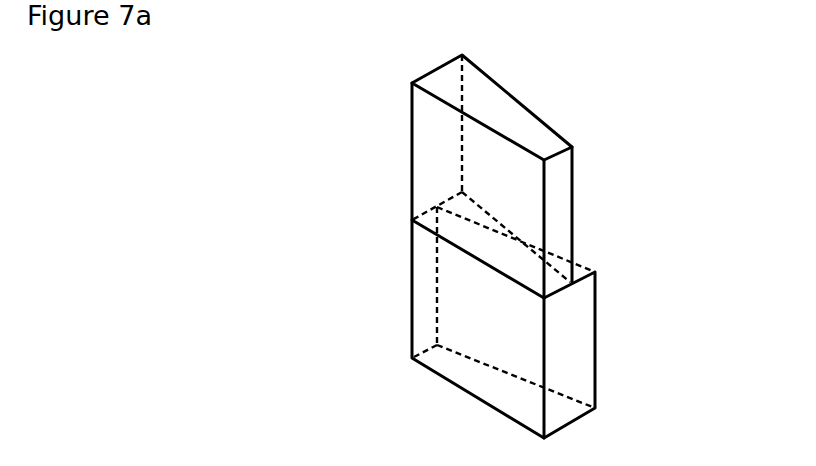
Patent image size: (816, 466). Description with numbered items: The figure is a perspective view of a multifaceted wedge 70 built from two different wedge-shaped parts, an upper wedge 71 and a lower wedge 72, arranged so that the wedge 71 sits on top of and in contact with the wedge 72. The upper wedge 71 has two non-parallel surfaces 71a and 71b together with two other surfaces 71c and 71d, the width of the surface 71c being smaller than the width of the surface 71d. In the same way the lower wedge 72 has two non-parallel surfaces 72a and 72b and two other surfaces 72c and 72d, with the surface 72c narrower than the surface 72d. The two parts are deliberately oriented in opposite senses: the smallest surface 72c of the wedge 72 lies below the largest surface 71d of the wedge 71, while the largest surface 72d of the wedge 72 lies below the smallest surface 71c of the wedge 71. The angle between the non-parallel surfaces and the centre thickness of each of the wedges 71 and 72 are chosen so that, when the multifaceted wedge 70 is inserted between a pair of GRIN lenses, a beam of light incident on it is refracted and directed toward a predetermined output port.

The multifaceted wedge 70 is at (287, 278).
The wedge 71 is at (410, 154).
The non-parallel surface 71a is at (482, 155).
The non-parallel surface 71b is at (513, 197).
The surface 71c is at (558, 233).
The surface 71d is at (440, 140).
The wedge 72 is at (410, 294).
The non-parallel surface 72a is at (478, 342).
The non-parallel surface 72b is at (510, 348).
The surface 72c is at (423, 313).
The surface 72d is at (577, 372).